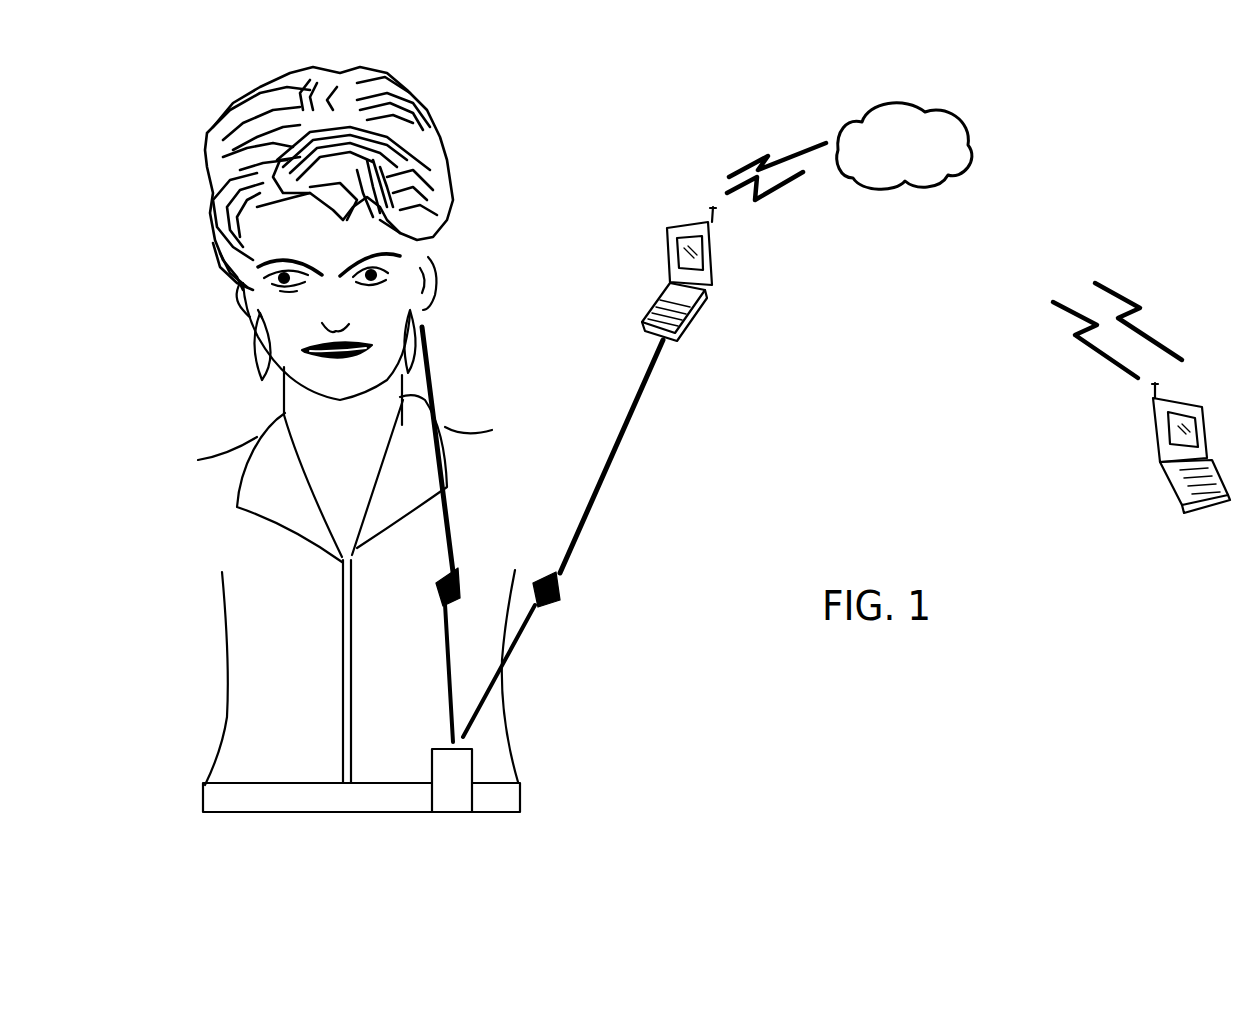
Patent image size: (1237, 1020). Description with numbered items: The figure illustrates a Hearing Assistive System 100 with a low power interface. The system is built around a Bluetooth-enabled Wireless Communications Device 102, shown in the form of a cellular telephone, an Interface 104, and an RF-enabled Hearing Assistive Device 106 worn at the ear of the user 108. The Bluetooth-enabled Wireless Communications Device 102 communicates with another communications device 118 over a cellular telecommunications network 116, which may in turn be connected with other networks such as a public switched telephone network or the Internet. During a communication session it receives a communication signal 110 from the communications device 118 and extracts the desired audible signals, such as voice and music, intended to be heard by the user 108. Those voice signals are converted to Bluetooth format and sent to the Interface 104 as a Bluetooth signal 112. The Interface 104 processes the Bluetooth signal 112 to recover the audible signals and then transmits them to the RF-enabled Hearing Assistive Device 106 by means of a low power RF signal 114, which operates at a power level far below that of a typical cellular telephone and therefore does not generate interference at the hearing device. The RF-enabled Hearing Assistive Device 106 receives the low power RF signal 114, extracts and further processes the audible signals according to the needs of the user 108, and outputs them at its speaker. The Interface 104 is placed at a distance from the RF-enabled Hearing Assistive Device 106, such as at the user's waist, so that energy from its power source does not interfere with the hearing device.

The Hearing Assistive System 100 is at (727, 508).
The Bluetooth-enabled Wireless Communications Device 102 is at (705, 312).
The Interface 104 is at (474, 760).
The RF-enabled Hearing Assistive Device 106 is at (442, 272).
The user 108 is at (455, 130).
The communication signal 110 is at (795, 183).
The Bluetooth signal 112 is at (623, 445).
The low power RF signal 114 is at (437, 398).
The cellular telecommunications network 116 is at (927, 187).
The communications device 118 is at (1168, 503).